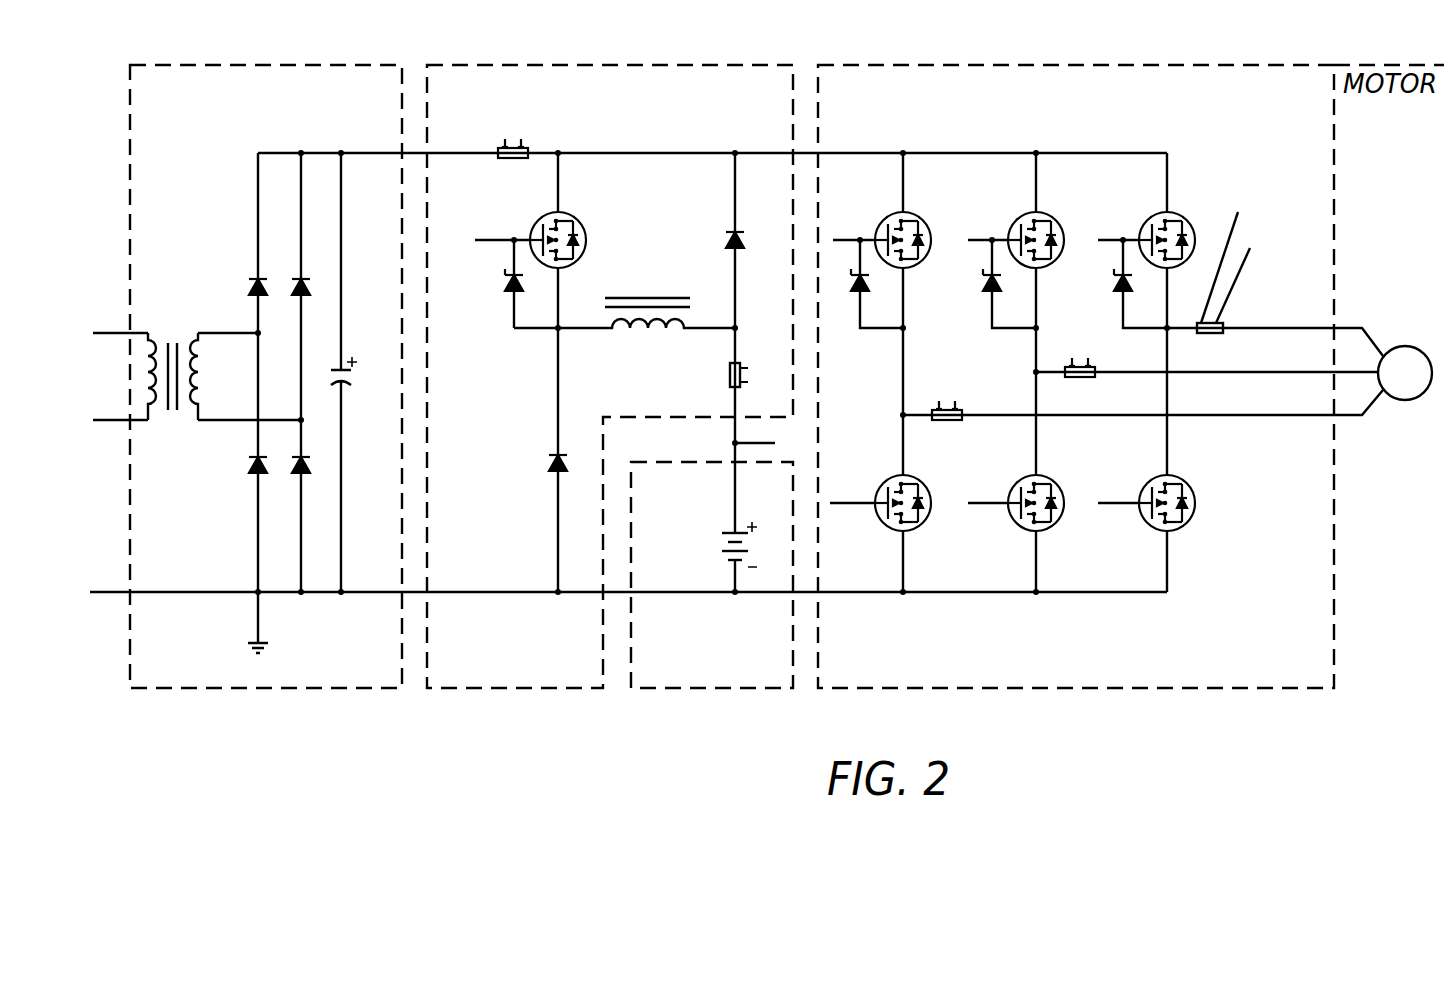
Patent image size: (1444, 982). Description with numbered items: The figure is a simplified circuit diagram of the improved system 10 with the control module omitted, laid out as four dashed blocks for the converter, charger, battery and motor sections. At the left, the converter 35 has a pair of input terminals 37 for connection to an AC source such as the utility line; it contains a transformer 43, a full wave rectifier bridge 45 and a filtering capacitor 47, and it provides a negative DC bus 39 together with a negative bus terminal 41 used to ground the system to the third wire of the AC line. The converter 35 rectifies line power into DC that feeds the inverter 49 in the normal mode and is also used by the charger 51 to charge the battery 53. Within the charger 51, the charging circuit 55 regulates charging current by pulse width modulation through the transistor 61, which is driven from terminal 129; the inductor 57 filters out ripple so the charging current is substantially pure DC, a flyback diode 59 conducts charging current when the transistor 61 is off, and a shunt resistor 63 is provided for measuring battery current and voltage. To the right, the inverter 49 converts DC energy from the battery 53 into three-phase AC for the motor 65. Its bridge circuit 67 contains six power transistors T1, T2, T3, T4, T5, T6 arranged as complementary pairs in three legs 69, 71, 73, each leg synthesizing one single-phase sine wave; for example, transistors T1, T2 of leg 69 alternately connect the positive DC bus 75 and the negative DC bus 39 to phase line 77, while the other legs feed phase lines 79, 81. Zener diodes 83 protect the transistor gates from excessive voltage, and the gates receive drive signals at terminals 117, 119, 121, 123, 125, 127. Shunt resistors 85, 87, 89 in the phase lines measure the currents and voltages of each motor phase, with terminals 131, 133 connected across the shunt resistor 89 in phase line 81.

The improved system 10 is at (525, 697).
The converter 35 is at (132, 170).
The input terminals 37 is at (112, 420).
The negative DC bus 39 is at (237, 595).
The negative bus terminal 41 is at (118, 595).
The transformer 43 is at (197, 340).
The full wave rectifier bridge 45 is at (258, 228).
The filtering capacitor 47 is at (345, 386).
The inverter 49 is at (1010, 65).
The charger 51 is at (640, 65).
The battery 53 is at (631, 560).
The charging circuit 55 is at (535, 352).
The inductor 57 is at (645, 334).
The flyback diode 59 is at (726, 240).
The transistor 61 is at (580, 224).
The shunt resistor 63 is at (725, 370).
The motor 65 is at (1405, 346).
The bridge circuit 67 is at (893, 375).
The leg 69 is at (903, 352).
The leg 71 is at (1036, 341).
The leg 73 is at (1167, 341).
The positive DC bus 75 is at (1128, 153).
The phase line 77 is at (1218, 415).
The phase line 79 is at (1225, 372).
The phase line 81 is at (1252, 328).
The Zener diodes 83 is at (985, 289).
The shunt resistor 85 is at (960, 412).
The shunt resistor 87 is at (1080, 378).
The shunt resistor 89 is at (1230, 323).
The output terminal 117 is at (848, 240).
The output terminal 119 is at (862, 503).
The terminal 121 is at (976, 240).
The terminal 123 is at (985, 503).
The terminal 125 is at (1101, 240).
The terminal 127 is at (1113, 503).
The terminal 129 is at (476, 240).
The terminal 131 is at (1250, 248).
The terminal 133 is at (1238, 212).
The power transistor T1 is at (912, 214).
The power transistor T2 is at (918, 478).
The power transistor T3 is at (1043, 214).
The power transistor T4 is at (1050, 479).
The power transistor T5 is at (1185, 218).
The power transistor T6 is at (1190, 488).